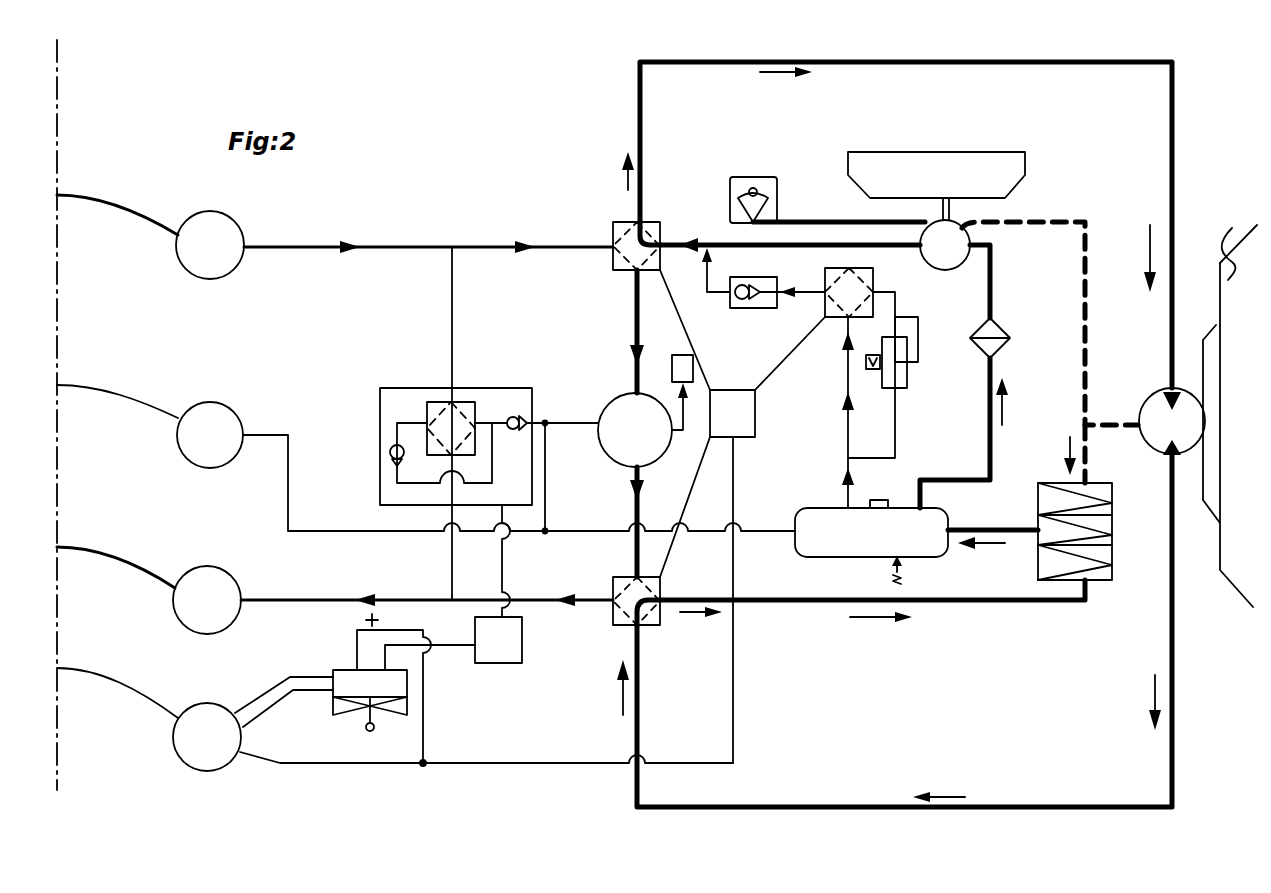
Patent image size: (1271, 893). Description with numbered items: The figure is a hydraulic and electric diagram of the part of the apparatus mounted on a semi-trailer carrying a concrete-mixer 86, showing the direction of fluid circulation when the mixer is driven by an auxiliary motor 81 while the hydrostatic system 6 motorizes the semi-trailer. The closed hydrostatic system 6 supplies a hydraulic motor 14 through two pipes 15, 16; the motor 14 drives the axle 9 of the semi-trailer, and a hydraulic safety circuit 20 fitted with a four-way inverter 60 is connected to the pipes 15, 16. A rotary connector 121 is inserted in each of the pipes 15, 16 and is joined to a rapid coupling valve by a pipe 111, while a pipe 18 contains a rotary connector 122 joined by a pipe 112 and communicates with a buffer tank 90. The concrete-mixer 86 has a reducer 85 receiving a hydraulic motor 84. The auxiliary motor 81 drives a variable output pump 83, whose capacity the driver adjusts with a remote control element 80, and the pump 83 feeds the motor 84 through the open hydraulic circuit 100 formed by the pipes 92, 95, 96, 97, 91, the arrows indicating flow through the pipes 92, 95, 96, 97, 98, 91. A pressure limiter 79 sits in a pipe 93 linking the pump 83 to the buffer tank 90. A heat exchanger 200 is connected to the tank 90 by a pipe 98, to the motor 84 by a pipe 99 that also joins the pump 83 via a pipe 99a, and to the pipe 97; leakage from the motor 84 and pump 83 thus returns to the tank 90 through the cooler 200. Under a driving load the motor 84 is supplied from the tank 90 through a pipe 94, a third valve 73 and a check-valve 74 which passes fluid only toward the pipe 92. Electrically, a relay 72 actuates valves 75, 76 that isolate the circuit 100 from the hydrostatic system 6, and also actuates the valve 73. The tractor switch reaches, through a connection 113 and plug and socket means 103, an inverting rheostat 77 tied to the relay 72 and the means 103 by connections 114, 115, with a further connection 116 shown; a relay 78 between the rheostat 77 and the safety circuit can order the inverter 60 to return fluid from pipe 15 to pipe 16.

The hydraulic circuit 100 is at (684, 55).
The pipe 95 is at (848, 62).
The pipe 96 is at (860, 807).
The pipe 97 is at (944, 603).
The pipe 98 is at (1018, 545).
The pipe 99 is at (1092, 460).
The pipe 99a is at (1090, 346).
The rotary connector 121 is at (208, 422).
The rotary connector 122 is at (210, 435).
The plug and socket means 103 is at (207, 737).
The pipe 111 is at (120, 195).
The pipe 112 is at (118, 390).
The connection 113 is at (94, 685).
The connection 114 is at (270, 700).
The connection 115 is at (268, 708).
The line 116 is at (326, 763).
The pipe 15 is at (322, 246).
The pipe 16 is at (280, 598).
The pipe 18 is at (328, 531).
The hydrostatic system 6 is at (452, 215).
The axle 9 is at (682, 392).
The hydraulic motor 14 is at (635, 423).
The hydraulic safety circuit 20 is at (489, 432).
The four-way inverter 60 is at (435, 402).
The relay 72 is at (755, 418).
The third valve 73 is at (826, 285).
The check-valve 74 is at (752, 308).
The valve 75 is at (648, 240).
The valve 76 is at (655, 618).
The inverting rheostat 77 is at (368, 680).
The relay 78 is at (502, 663).
The pressure limiter 79 is at (905, 378).
The remote control element 80 is at (740, 185).
The auxiliary motor 81 is at (936, 186).
The hydraulic pump 83 is at (945, 245).
The hydraulic motor 84 is at (1172, 421).
The reducer 85 is at (1210, 330).
The concrete-mixer 86 is at (1233, 238).
The buffer tank 90 is at (830, 548).
The pipe 91 is at (1010, 440).
The pipe 92 is at (795, 240).
The pipe 93 is at (900, 298).
The pipe 94 is at (848, 386).
The heat exchanger 200 is at (1040, 505).